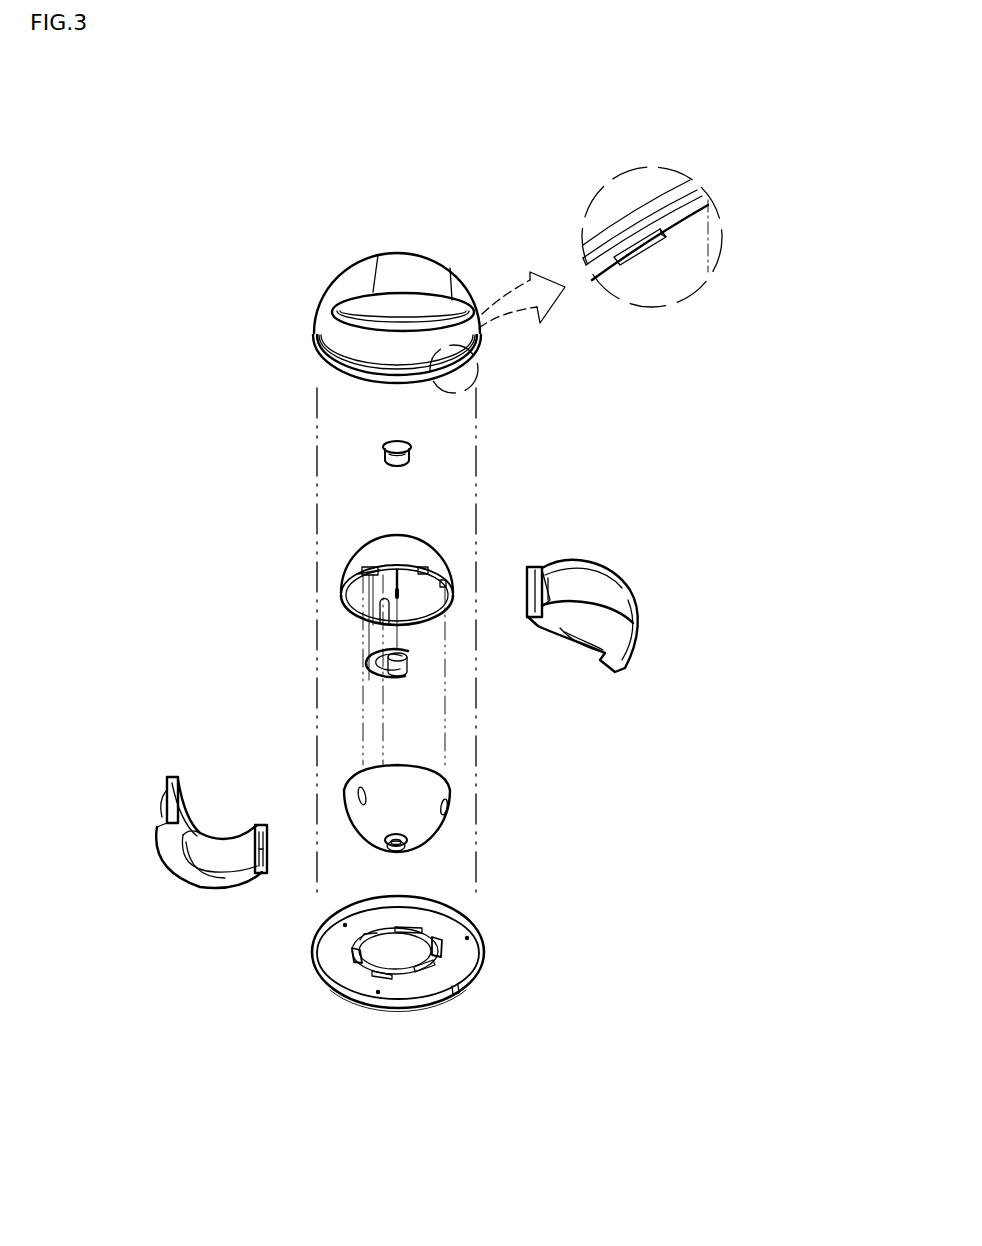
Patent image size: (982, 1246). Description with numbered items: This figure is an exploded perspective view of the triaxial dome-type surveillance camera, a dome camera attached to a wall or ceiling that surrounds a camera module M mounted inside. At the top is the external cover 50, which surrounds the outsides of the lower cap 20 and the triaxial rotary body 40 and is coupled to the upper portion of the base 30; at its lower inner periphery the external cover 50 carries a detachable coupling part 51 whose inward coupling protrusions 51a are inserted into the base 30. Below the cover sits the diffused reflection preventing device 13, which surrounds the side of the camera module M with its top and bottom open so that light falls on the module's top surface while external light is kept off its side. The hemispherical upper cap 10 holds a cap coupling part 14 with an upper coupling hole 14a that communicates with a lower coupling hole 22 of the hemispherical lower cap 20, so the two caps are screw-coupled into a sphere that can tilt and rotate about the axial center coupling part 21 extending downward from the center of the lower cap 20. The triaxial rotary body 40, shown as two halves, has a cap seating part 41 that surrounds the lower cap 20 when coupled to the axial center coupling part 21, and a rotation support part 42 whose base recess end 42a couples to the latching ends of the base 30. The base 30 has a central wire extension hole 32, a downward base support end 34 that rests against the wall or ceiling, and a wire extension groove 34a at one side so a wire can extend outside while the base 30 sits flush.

The upper cap 10 is at (339, 555).
The diffused reflection preventing device 13 is at (412, 443).
The cap coupling part 14 is at (347, 573).
The upper coupling hole 14a is at (368, 577).
The camera module M is at (404, 663).
The lower cap 20 is at (342, 768).
The axial center coupling part 21 is at (408, 842).
The lower coupling hole 22 is at (449, 803).
The base 30 is at (312, 993).
The wire extension hole 32 is at (411, 950).
The base support end 34 is at (400, 1008).
The wire extension groove 34a is at (456, 988).
The triaxial rotary body 40 is at (160, 757).
The cap seating part 41 is at (610, 582).
The rotation support part 42 is at (632, 618).
The base recess end 42a is at (197, 874).
The external cover 50 is at (326, 264).
The detachable coupling part 51 is at (688, 172).
The coupling protrusion 51a is at (657, 241).